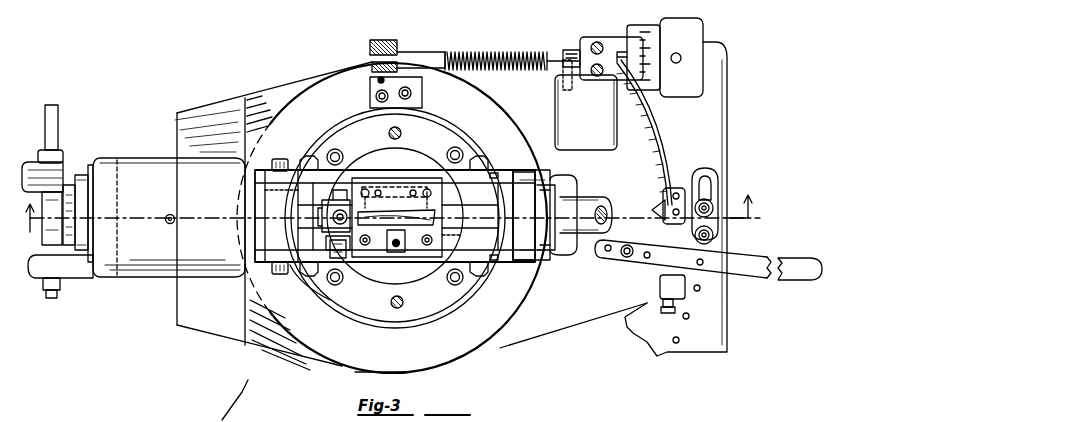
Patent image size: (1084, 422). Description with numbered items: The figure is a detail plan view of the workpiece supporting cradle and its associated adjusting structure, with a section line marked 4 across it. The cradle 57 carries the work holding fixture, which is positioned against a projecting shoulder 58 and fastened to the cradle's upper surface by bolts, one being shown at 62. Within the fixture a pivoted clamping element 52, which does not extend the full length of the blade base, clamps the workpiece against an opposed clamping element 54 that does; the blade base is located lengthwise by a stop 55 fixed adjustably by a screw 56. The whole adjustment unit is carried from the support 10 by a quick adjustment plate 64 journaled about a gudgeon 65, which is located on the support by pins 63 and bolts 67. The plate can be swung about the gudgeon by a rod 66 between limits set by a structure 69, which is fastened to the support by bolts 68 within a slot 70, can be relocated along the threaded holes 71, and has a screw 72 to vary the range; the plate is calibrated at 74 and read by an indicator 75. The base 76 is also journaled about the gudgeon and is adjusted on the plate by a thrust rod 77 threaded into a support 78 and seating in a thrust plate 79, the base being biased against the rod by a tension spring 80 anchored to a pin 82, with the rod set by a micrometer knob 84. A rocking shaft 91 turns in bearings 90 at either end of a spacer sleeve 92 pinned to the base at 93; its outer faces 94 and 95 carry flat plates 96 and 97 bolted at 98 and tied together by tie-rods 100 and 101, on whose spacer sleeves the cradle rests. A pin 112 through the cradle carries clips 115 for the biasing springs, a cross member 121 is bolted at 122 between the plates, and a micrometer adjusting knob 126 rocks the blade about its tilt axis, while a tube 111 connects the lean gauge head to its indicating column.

The section line 4- 4 is at (393, 219).
The support 10 is at (727, 98).
The clamping element 52 is at (392, 255).
The clamping element 54 is at (392, 182).
The stop 55 is at (318, 222).
The screw 56 is at (322, 210).
The cradle 57 is at (512, 217).
The projecting shoulder 58 is at (319, 413).
The bolt 62 is at (432, 243).
The pins 63 is at (397, 308).
The quick adjustment plate 64 is at (583, 305).
The gudgeon 65 is at (435, 310).
The rod 66 is at (795, 280).
The bolts 67 is at (340, 150).
The bolts 68 is at (712, 215).
The structure 69 is at (700, 288).
The slot 70 is at (712, 180).
The threaded holes 71 is at (688, 316).
The screw 72 is at (668, 313).
The calibration 74 is at (672, 185).
The indicator 75 is at (686, 167).
The base 76 is at (262, 366).
The thrust rod 77 is at (421, 61).
The support 78 is at (586, 105).
The thrust plate 79 is at (370, 45).
The tension spring 80 is at (480, 50).
The pin 82 is at (565, 50).
The micrometer knob 84 is at (695, 58).
The bearings 90 is at (112, 420).
The rocking shaft 91 is at (68, 175).
The spacer sleeve 92 is at (211, 420).
The pin 93 is at (170, 214).
The face 94 is at (285, 198).
The face 95 is at (326, 244).
The flat plate 96 is at (462, 185).
The flat plate 97 is at (478, 255).
The bolts 98 is at (280, 159).
The tie-rod 100 is at (308, 156).
The tie-rod 101 is at (482, 156).
The tube 111 is at (50, 105).
The pin 112 is at (330, 255).
The clips 115 is at (340, 290).
The cross member 121 is at (545, 250).
The bolts 122 is at (506, 168).
The micrometer adjusting knob 126 is at (560, 188).